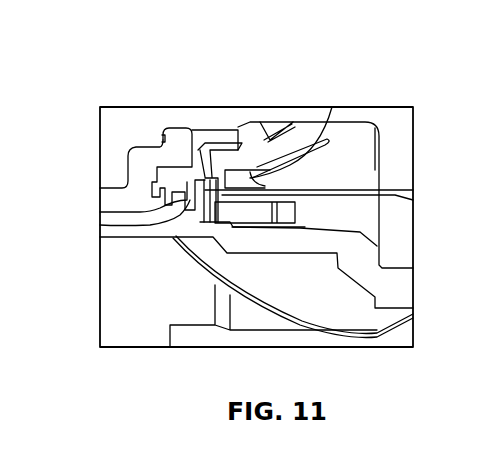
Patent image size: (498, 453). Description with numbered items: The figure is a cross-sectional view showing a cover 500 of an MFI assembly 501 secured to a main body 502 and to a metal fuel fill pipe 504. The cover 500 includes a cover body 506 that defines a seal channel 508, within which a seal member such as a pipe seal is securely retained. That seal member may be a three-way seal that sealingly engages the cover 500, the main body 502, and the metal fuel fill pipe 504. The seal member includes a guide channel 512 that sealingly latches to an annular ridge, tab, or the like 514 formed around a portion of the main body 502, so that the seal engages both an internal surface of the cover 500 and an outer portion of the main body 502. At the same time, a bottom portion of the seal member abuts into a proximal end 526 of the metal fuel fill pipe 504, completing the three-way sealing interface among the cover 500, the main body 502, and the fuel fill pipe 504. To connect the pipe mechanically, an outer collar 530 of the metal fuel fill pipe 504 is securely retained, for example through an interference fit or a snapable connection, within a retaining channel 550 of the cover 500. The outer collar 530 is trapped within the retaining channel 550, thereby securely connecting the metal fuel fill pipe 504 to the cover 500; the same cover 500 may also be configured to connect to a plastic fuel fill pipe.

The cover 500 is at (332, 107).
The MFI assembly 501 is at (123, 124).
The main body 502 is at (100, 272).
The metal fuel fill pipe 504 is at (395, 200).
The cover body 506 is at (127, 167).
The seal channel 508 is at (168, 127).
The guide channel 512 is at (191, 170).
The annular ridge 514 is at (140, 215).
The proximal end 526 is at (218, 160).
The outer collar 530 is at (377, 123).
The retaining channel 550 is at (266, 137).